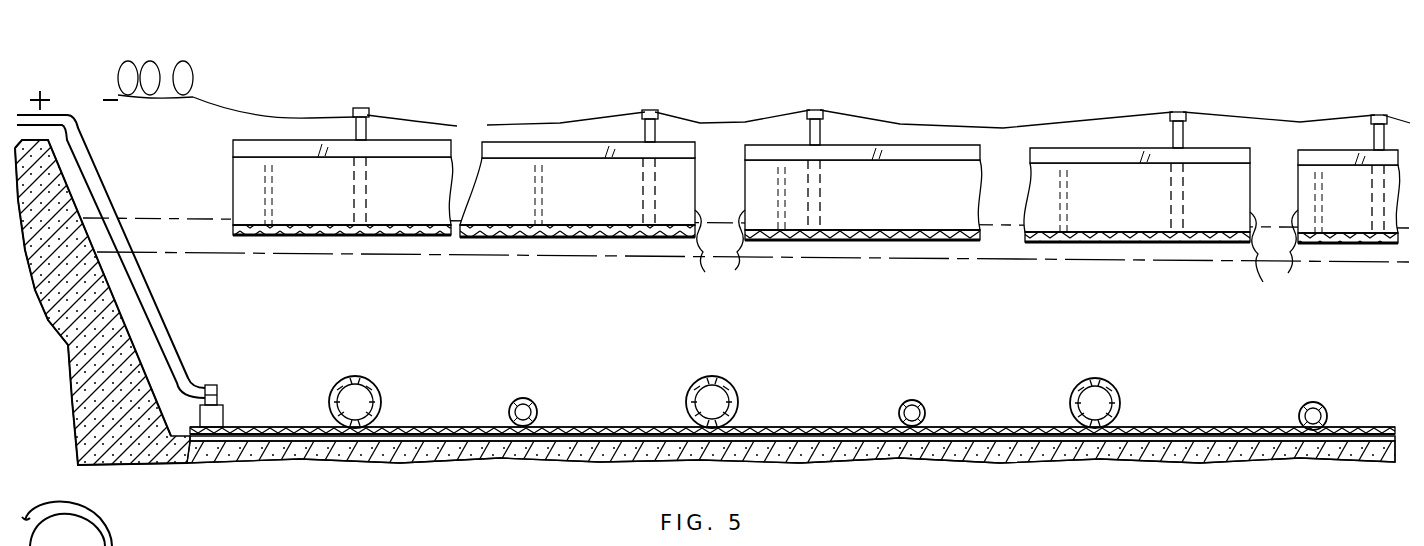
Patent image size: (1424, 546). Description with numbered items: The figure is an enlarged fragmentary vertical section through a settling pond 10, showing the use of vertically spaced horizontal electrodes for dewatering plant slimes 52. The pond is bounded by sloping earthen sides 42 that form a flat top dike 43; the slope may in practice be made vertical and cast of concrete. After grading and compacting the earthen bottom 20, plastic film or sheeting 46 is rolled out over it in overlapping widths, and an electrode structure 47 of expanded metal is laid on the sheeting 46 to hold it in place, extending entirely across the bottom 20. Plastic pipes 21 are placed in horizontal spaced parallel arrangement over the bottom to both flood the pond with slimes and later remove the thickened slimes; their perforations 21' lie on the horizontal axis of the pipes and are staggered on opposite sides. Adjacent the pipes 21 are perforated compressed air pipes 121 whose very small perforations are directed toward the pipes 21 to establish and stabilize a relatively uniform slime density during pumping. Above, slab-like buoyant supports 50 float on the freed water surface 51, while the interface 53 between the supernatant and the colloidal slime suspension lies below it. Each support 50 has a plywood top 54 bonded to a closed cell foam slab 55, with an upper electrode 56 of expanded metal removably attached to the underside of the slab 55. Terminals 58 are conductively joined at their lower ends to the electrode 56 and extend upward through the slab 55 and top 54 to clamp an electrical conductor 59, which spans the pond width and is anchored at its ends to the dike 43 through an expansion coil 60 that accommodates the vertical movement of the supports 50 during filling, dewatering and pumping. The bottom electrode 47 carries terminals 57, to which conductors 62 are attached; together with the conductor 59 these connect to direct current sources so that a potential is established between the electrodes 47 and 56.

The settling pond 10 is at (888, 352).
The earthen bottom 20 is at (457, 447).
The pipes 21 is at (747, 396).
The perforations 21' is at (696, 394).
The sloping earthen sides 42 is at (116, 302).
The flat top dike 43 is at (74, 136).
The plastic film or sheeting 46 is at (1133, 462).
The electrode structure 47 is at (485, 426).
The buoyant support 50 is at (595, 212).
The freed water surface 51 is at (157, 218).
The plant slimes 52 is at (428, 343).
The interface 53 is at (272, 257).
The top 54 is at (410, 143).
The slab 55 is at (996, 254).
The electrode 56 is at (385, 236).
The terminals 57 is at (223, 407).
The terminals 58 is at (352, 186).
The electrical conductor 59 is at (300, 118).
The expansion coil 60 is at (193, 86).
The conductors 62 is at (232, 364).
The compressed air pipes 121 is at (532, 400).